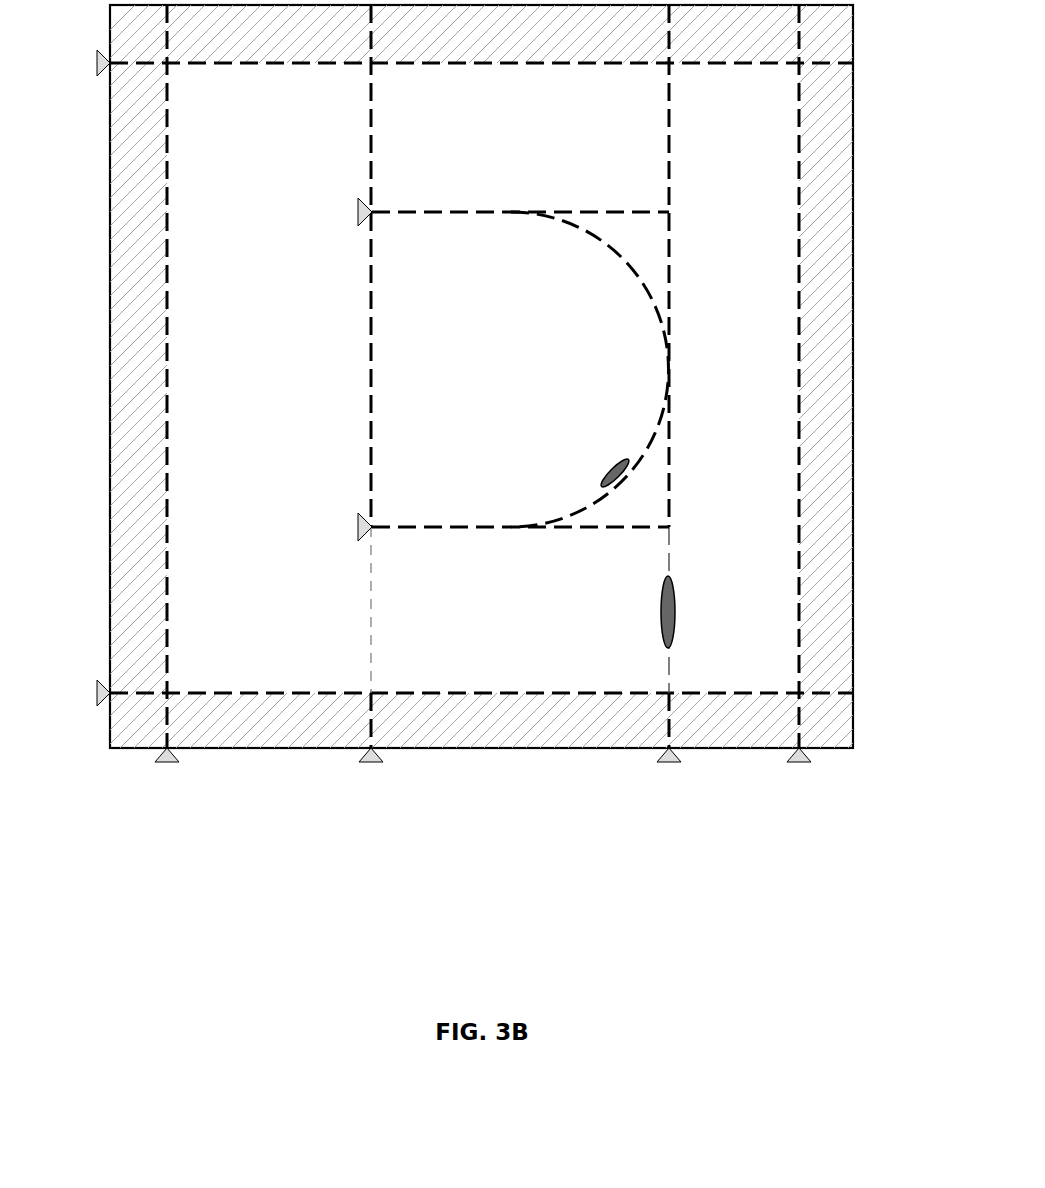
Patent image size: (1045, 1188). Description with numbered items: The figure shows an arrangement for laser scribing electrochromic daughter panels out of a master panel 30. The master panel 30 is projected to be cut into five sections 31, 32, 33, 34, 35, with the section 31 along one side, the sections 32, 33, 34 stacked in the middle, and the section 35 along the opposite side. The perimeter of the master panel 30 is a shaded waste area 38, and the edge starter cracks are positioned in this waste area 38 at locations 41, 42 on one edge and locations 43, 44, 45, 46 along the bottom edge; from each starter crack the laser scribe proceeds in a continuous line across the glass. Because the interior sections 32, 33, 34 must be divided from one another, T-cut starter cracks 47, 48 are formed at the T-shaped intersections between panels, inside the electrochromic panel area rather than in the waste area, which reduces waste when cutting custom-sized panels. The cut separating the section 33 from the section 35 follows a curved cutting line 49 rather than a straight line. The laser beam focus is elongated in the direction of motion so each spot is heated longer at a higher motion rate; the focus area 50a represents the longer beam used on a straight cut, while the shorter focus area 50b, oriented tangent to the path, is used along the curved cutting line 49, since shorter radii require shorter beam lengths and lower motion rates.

The master panel 30 is at (470, 894).
The section 31 is at (266, 378).
The section 32 is at (517, 138).
The section 33 is at (517, 368).
The section 34 is at (517, 610).
The section 35 is at (731, 378).
The shaded waste area 38 is at (140, 307).
The edge starter crack location 41 is at (447, 63).
The edge starter crack location 42 is at (447, 692).
The edge starter crack location 43 is at (166, 402).
The edge starter crack location 44 is at (370, 402).
The edge starter crack location 45 is at (668, 402).
The edge starter crack location 46 is at (798, 402).
The T-cut starter crack 47 is at (347, 205).
The T-cut starter crack 48 is at (347, 520).
The curved cutting line 49 is at (648, 258).
The focus area 50a is at (687, 620).
The focus area 50b is at (640, 472).